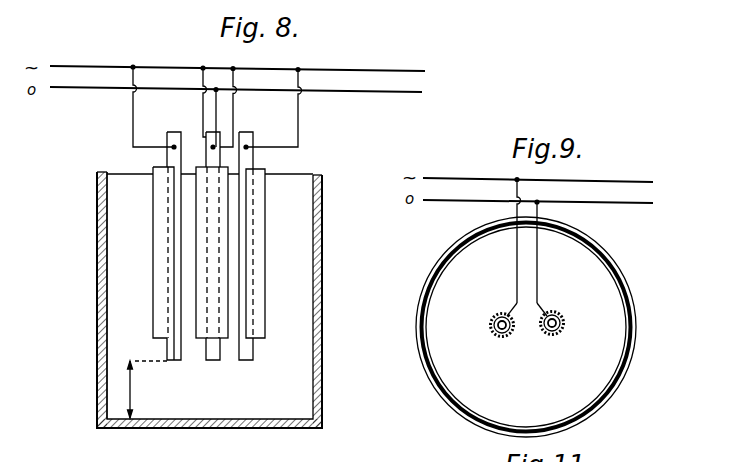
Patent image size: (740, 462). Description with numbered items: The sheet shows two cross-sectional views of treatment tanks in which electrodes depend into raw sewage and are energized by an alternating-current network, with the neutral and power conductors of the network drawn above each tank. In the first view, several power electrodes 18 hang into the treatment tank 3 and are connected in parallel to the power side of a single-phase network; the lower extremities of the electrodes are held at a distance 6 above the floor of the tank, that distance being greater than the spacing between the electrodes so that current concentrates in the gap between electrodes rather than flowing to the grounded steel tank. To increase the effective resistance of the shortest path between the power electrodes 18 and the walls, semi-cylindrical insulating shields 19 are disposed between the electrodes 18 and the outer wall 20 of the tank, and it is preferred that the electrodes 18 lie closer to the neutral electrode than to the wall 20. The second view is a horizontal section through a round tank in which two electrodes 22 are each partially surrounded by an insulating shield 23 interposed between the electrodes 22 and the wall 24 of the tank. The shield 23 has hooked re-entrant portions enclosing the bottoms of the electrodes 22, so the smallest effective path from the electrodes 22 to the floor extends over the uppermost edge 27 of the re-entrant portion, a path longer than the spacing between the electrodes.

In FIG. 8, the treatment tank 3 is at (300, 315).
In FIG. 8, the distance of the lower extremities of the electrodes from the floor 6 is at (130, 392).
In FIG. 8, the power electrodes 18 is at (165, 353).
In FIG. 8, the semi-cylindrical shields 19 is at (162, 243).
In FIG. 8, the outer wall of the tank 20 is at (100, 302).
In FIG. 9, the electrodes 22 is at (492, 332).
In FIG. 9, the insulating shield 23 is at (490, 317).
In FIG. 9, the wall of the tank 24 is at (613, 391).
In FIG. 9, the uppermost edge of the re-entrant portion 27 is at (542, 338).